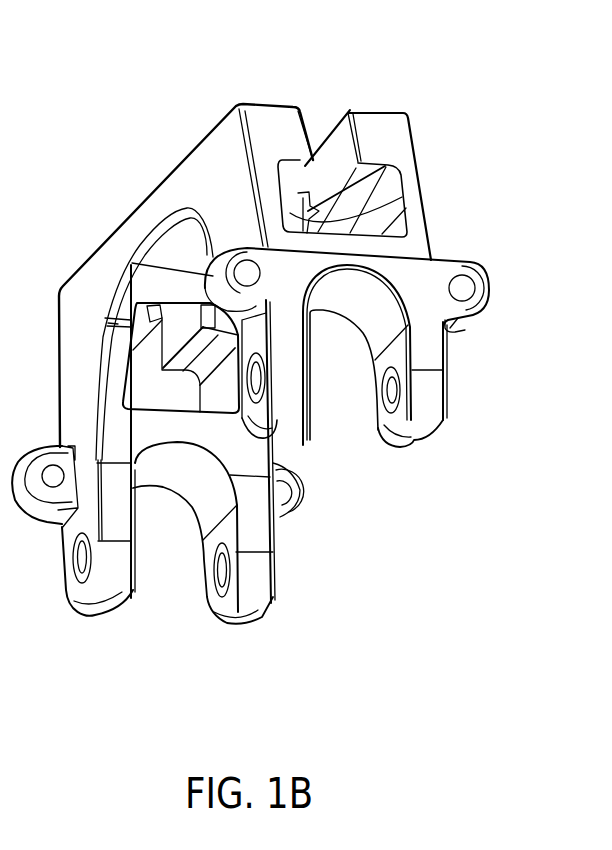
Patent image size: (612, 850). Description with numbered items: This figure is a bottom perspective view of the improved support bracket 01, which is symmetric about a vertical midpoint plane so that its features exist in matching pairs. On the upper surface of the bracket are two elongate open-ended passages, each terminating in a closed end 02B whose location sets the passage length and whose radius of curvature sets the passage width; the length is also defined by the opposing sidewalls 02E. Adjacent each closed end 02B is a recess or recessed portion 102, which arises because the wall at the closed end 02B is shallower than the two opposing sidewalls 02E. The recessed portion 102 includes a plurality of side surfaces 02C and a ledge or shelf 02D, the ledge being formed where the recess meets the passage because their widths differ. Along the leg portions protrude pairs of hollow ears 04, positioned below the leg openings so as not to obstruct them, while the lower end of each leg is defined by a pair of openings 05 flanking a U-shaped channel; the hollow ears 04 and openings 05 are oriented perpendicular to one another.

The support bracket 01 is at (291, 327).
The closed end 02B is at (313, 160).
The side surfaces 02C is at (290, 215).
The ledge or shelf 02D is at (280, 188).
The opposing sidewalls 02E is at (337, 130).
The hollow ears 04 is at (245, 270).
The openings 05 is at (388, 394).
The recess or recessed portion 102 is at (330, 225).